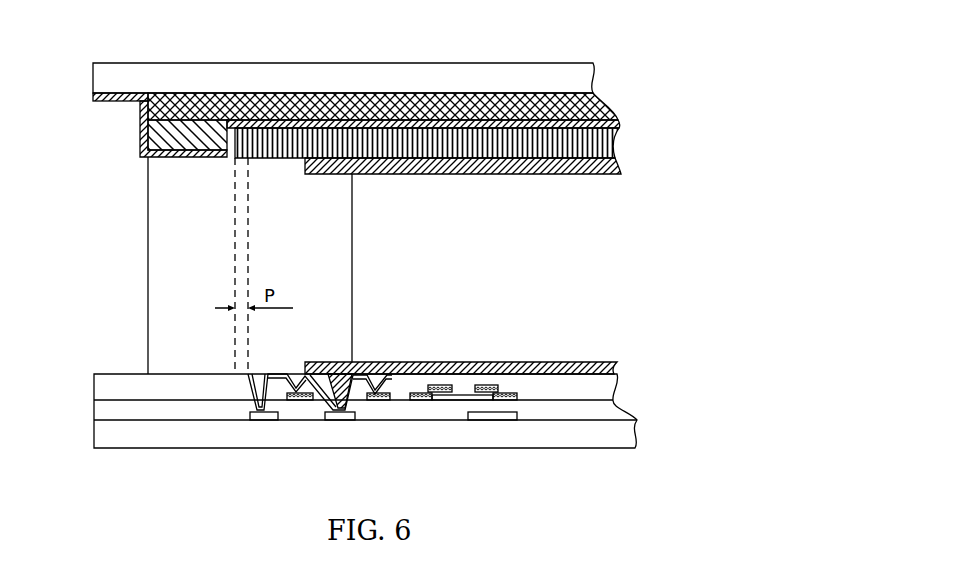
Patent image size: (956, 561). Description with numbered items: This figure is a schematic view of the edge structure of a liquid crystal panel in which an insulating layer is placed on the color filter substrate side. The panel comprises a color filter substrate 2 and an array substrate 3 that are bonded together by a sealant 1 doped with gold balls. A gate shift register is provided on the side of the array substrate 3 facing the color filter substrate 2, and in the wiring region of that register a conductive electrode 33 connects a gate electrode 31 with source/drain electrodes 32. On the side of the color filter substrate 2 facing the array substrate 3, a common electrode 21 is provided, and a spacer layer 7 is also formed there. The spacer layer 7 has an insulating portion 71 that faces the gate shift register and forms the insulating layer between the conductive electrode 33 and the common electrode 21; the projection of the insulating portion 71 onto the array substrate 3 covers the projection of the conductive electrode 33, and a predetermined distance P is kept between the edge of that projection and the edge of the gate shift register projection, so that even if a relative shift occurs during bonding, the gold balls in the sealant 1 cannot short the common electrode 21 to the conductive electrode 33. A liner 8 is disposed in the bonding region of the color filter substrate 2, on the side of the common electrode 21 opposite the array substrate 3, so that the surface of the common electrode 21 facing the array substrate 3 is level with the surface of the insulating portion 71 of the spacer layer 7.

The sealant 1 is at (165, 226).
The color filter substrate 2 is at (81, 82).
The common electrode 21 is at (122, 99).
The array substrate 3 is at (81, 423).
The gate electrode 31 is at (259, 414).
The source/drain electrodes 32 is at (300, 400).
The conductive electrode 33 is at (256, 405).
The spacer layer 7 is at (602, 143).
The insulating portion 71 is at (267, 133).
The liner 8 is at (141, 143).